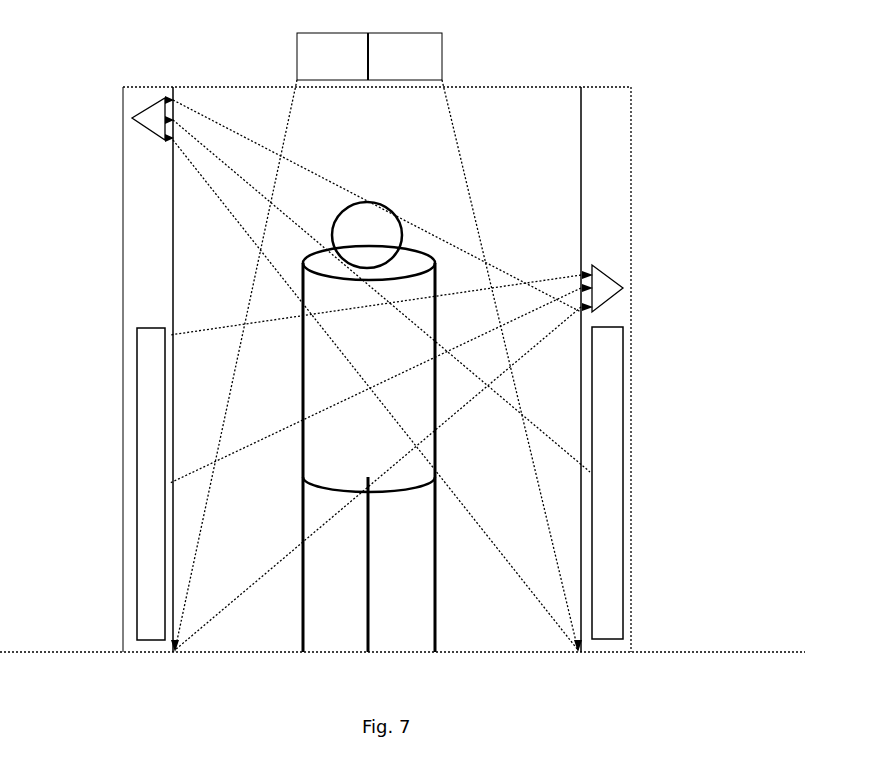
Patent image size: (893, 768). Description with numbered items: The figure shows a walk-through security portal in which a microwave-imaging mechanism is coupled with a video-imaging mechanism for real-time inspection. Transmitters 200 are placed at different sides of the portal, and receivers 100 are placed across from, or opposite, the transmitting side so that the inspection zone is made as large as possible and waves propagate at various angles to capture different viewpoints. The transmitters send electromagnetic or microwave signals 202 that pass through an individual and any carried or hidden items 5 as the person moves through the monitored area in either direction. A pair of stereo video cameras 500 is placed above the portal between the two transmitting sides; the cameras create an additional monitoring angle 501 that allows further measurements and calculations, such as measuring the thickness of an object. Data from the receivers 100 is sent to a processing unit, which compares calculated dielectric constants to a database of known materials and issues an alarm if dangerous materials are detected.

The carried or hidden items 5 is at (369, 427).
The receiver 100 is at (150, 117).
The transmitter 200 is at (148, 352).
The signals 202 is at (468, 487).
The stereo video cameras 500 is at (369, 56).
The monitoring angle 501 is at (376, 366).